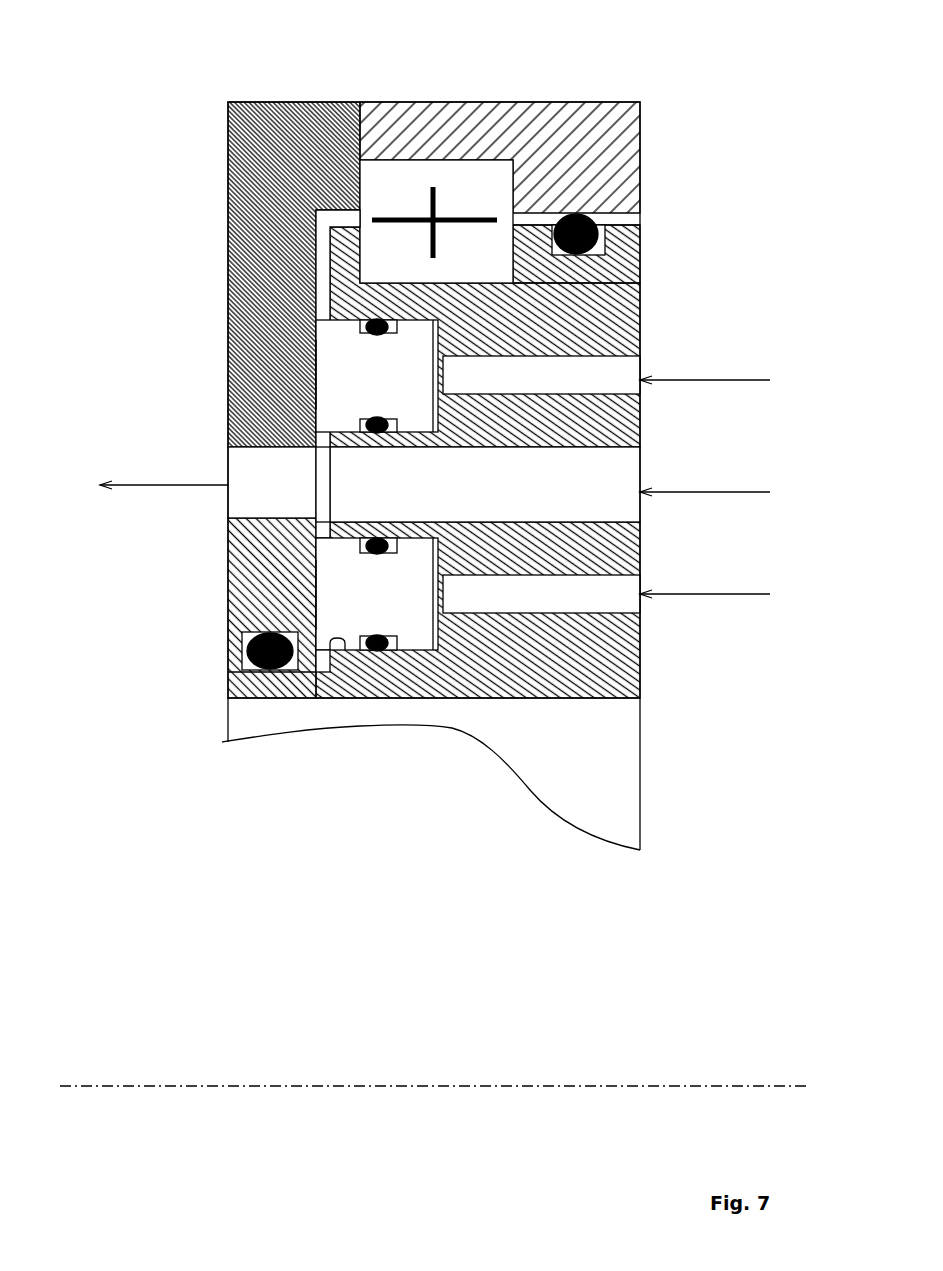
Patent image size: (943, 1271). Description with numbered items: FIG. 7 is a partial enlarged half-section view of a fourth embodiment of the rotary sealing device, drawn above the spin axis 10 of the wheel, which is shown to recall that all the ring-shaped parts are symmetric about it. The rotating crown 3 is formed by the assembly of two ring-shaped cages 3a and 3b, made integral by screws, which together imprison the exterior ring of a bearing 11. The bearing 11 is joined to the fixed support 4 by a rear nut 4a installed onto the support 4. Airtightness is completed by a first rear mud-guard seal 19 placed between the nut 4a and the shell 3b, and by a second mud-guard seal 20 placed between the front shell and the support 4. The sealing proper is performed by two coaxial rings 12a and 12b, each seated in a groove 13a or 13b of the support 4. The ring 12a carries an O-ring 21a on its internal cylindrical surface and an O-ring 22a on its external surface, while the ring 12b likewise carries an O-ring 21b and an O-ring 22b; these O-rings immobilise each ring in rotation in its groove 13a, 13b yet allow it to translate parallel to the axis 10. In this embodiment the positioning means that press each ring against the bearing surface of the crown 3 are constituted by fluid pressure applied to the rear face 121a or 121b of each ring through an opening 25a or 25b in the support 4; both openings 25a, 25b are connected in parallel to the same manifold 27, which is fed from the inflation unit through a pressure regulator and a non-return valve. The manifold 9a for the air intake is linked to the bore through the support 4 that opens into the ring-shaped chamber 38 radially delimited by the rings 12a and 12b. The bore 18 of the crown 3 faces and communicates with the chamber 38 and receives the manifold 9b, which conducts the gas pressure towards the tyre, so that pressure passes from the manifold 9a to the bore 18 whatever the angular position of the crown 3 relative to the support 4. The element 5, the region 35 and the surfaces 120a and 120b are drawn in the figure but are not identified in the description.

The rotating crown 3 is at (143, 130).
The ring-shaped cage 3a is at (262, 140).
The ring-shaped cage 3b is at (622, 122).
The support 4 is at (623, 667).
The rear nut 4a is at (617, 264).
The base portion 5 is at (118, 708).
The manifold for the air intake 9a is at (750, 492).
The manifold 9b is at (142, 485).
The spin axis 10 is at (120, 1086).
The bearing 11 is at (436, 221).
The coaxial ring 12a is at (377, 594).
The coaxial ring 12b is at (377, 376).
The groove 13a is at (321, 672).
The groove 13b is at (320, 282).
The bore 18 is at (272, 482).
The first rear mud-guard seal 19 is at (598, 228).
The second mud-guard seal 20 is at (277, 672).
The O-ring 21a is at (383, 658).
The O-ring 21b is at (365, 422).
The O-ring 22a is at (365, 552).
The O-ring 22b is at (365, 330).
The opening 25a is at (541, 594).
The opening 25b is at (541, 375).
The manifold 27 is at (750, 380).
The central passage 35 is at (485, 484).
The ring-shaped chamber 38 is at (320, 502).
The first chamber wall 120a is at (316, 600).
The second chamber wall 120b is at (316, 372).
The rear face 121a is at (445, 622).
The rear face 121b is at (445, 343).